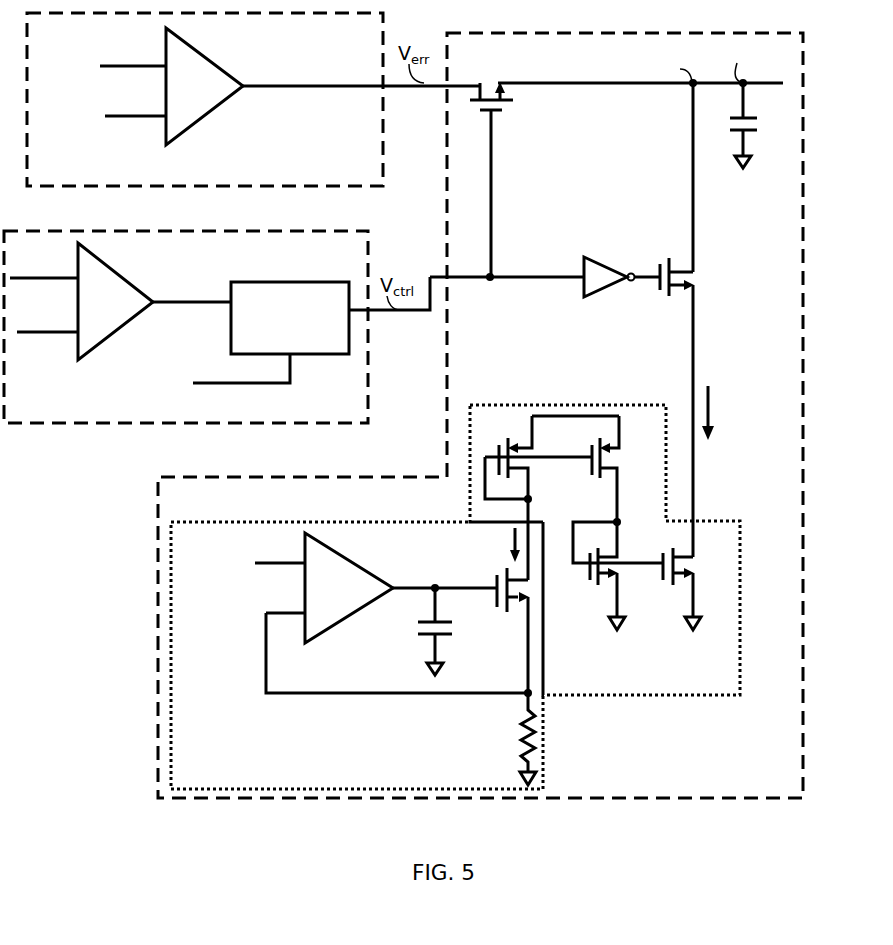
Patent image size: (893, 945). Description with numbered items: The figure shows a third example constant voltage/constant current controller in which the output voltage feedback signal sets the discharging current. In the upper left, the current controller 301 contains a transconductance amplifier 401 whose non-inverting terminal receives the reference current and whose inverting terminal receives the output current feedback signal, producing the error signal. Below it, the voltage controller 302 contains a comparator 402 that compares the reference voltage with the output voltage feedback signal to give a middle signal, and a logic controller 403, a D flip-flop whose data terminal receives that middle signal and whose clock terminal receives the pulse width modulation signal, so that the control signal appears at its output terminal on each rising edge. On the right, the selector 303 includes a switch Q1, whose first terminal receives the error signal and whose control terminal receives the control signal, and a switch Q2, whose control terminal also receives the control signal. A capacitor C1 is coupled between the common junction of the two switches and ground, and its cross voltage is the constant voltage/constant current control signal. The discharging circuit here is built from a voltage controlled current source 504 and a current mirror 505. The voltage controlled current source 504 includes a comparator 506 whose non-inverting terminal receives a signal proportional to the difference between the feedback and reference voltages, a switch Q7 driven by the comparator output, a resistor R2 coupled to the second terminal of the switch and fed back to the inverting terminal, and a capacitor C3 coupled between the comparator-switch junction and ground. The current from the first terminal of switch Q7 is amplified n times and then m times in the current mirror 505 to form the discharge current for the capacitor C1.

The current controller 301 is at (253, 99).
The transconductance amplifier 401 is at (290, 86).
The voltage controller 302 is at (217, 327).
The comparator 402 is at (120, 301).
The logic controller 403 is at (302, 330).
The selector 303 is at (480, 415).
The current mirror 505 is at (605, 550).
The voltage controlled current source 504 is at (357, 655).
The comparator 506 is at (354, 613).
The switch Q1 is at (468, 84).
The switch Q2 is at (694, 258).
The switch Q7 is at (525, 622).
The capacitor C1 is at (746, 135).
The capacitor C3 is at (431, 630).
The resistor R2 is at (522, 726).